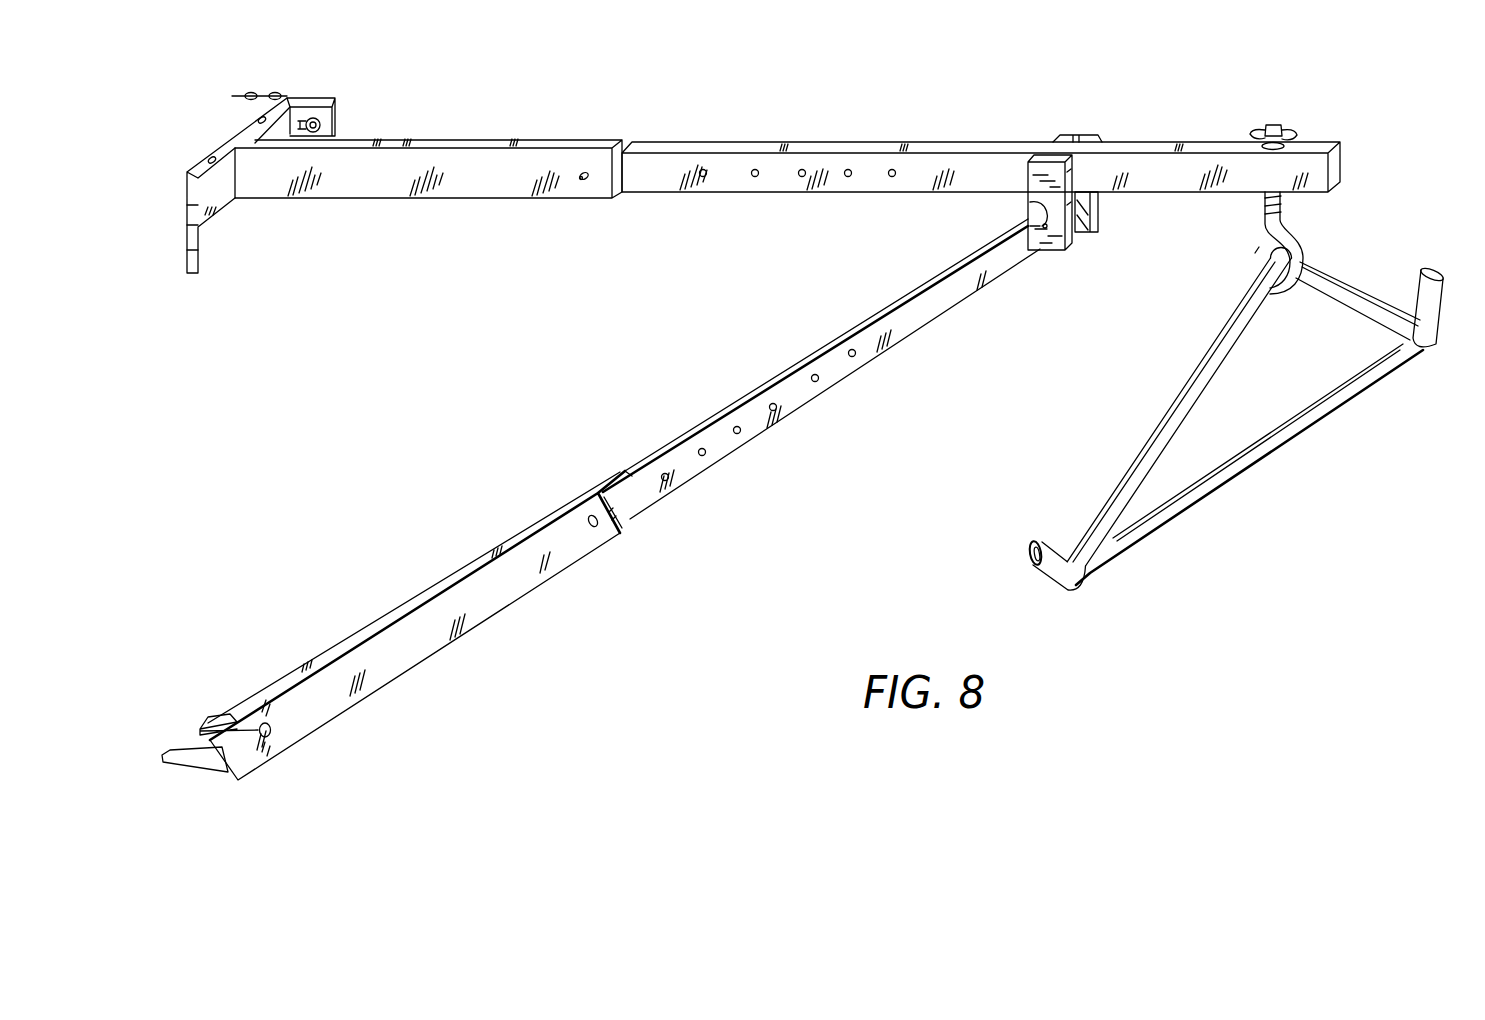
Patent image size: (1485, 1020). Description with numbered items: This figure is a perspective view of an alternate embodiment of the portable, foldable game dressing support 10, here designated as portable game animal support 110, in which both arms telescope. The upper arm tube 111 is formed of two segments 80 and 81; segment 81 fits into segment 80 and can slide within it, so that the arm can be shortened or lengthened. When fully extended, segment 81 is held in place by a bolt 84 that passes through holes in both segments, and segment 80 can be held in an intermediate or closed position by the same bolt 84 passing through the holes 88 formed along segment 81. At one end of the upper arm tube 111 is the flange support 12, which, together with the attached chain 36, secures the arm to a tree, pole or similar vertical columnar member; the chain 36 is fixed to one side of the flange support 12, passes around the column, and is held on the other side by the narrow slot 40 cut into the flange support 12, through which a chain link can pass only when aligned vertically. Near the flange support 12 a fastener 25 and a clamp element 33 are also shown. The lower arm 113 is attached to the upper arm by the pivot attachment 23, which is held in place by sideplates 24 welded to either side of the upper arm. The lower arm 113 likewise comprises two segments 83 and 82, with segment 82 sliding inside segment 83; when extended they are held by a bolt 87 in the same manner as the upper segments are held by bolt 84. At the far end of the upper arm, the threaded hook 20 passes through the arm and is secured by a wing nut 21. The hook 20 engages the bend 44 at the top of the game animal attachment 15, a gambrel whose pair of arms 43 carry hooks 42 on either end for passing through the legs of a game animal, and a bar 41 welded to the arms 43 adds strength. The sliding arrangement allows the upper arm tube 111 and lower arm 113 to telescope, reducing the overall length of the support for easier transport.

The game dressing support 10 is at (745, 173).
The flange support 12 is at (258, 239).
The game animal attachment 15 is at (1322, 459).
The hook 20 is at (1284, 223).
The wing nut 21 is at (1293, 133).
The pivot attachment 23 is at (1030, 202).
The sideplates 24 is at (1062, 250).
The fastener 25 is at (265, 723).
The clamp 33 is at (330, 123).
The chain 36 is at (262, 92).
The slot 40 is at (200, 210).
The bar 41 is at (1170, 520).
The hooks 42 is at (1443, 273).
The arms 43 is at (1352, 290).
The bend 44 is at (1262, 250).
The segment 80 is at (560, 200).
The segment 81 is at (775, 196).
The segment 82 is at (803, 412).
The segment 83 is at (480, 623).
The bolt 84 is at (588, 172).
The bolt 87 is at (591, 527).
The holes 88 is at (892, 178).
The portable game animal support 110 is at (990, 65).
The upper arm tube 111 is at (847, 125).
The lower arm 113 is at (696, 558).